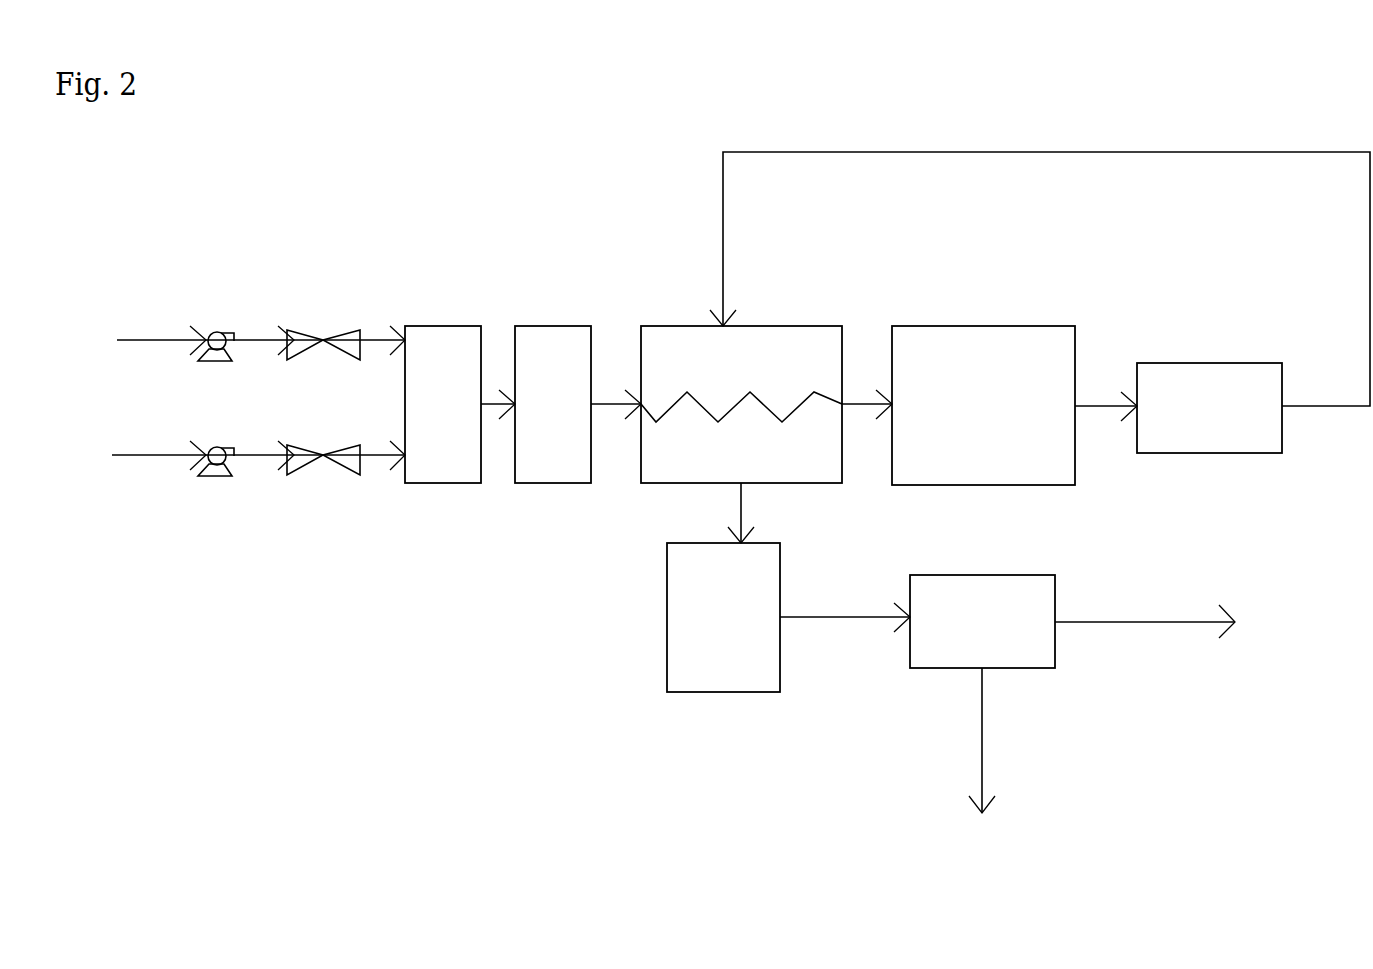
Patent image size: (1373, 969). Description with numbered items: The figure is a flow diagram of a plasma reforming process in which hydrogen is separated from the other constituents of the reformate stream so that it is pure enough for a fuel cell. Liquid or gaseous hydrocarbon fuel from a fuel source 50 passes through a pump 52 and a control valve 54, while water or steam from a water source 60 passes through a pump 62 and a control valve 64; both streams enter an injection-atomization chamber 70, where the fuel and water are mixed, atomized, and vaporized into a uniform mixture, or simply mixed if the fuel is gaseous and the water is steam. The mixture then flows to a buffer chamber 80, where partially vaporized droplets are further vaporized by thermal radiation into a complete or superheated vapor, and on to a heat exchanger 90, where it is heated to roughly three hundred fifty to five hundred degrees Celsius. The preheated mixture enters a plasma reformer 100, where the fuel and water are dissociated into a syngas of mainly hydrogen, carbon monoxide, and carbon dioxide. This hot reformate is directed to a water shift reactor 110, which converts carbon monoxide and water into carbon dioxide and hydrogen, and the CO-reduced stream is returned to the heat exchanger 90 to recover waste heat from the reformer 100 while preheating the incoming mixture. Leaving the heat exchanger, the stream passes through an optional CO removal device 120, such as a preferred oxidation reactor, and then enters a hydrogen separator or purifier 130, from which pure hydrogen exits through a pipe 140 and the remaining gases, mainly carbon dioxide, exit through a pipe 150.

The fuel source 50 is at (229, 344).
The pump 52 is at (225, 330).
The control valve 54 is at (343, 330).
The water source 60 is at (224, 464).
The pump 62 is at (217, 480).
The control valve 64 is at (340, 470).
The injection-atomization chamber 70 is at (447, 325).
The buffer chamber 80 is at (558, 325).
The heat exchanger 90 is at (817, 323).
The plasma reformer 100 is at (1025, 325).
The water shift reactor 110 is at (1238, 363).
The CO removal device 120 is at (717, 692).
The hydrogen separator or purifier 130 is at (1000, 575).
The pipe 140 is at (1170, 622).
The pipe 150 is at (984, 761).